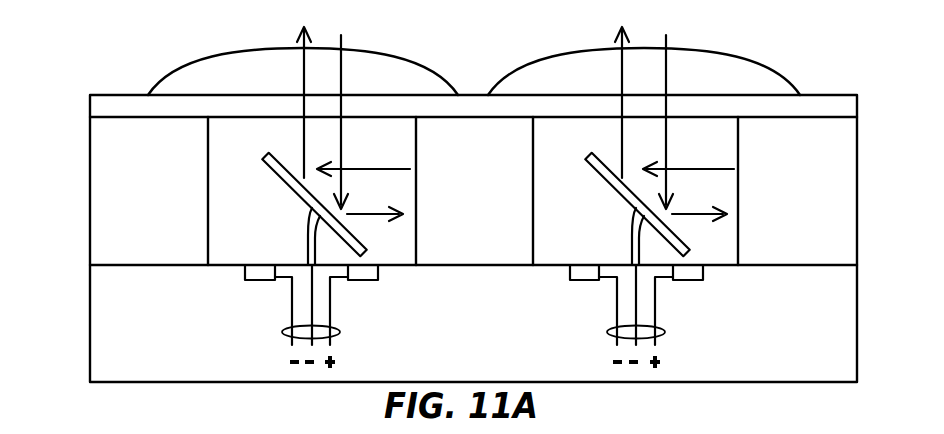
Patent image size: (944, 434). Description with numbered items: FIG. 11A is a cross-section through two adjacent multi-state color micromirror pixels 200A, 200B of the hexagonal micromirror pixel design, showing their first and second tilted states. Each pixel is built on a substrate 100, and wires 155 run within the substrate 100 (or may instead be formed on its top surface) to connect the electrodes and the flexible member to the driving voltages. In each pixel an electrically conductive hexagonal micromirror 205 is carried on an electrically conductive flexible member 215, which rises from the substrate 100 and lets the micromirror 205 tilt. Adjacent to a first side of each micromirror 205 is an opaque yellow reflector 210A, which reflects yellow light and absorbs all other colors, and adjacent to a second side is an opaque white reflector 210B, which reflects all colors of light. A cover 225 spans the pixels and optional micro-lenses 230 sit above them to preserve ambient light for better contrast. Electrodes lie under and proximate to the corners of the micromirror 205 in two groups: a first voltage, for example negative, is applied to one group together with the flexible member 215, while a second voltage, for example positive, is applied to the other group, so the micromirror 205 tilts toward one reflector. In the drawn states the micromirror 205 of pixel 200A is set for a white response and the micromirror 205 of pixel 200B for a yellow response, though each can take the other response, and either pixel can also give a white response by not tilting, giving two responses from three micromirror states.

The substrate 100 is at (836, 375).
The wires 155 is at (340, 333).
The micromirror pixel 200A is at (138, 86).
The micromirror pixel 200B is at (810, 86).
The micromirror 205 is at (272, 168).
The yellow reflector 210A is at (130, 201).
The white reflector 210B is at (442, 201).
The flexible member 215 is at (308, 238).
The flexible member 225 is at (107, 111).
The lens 230 is at (240, 90).